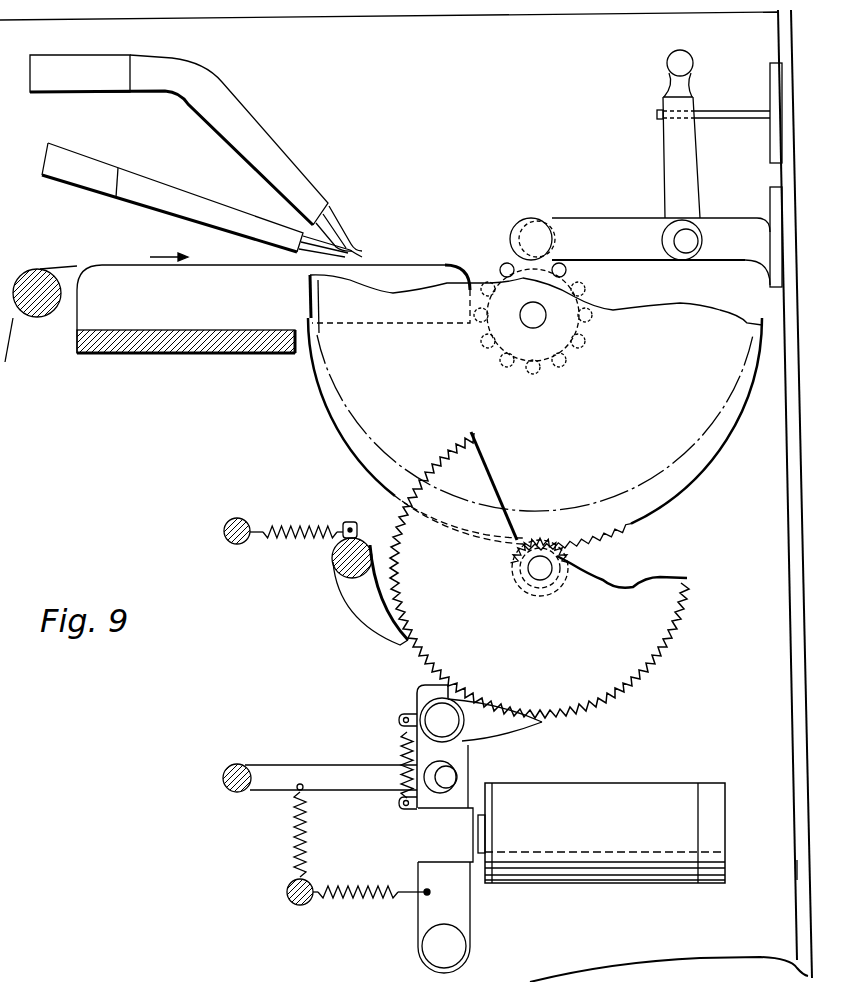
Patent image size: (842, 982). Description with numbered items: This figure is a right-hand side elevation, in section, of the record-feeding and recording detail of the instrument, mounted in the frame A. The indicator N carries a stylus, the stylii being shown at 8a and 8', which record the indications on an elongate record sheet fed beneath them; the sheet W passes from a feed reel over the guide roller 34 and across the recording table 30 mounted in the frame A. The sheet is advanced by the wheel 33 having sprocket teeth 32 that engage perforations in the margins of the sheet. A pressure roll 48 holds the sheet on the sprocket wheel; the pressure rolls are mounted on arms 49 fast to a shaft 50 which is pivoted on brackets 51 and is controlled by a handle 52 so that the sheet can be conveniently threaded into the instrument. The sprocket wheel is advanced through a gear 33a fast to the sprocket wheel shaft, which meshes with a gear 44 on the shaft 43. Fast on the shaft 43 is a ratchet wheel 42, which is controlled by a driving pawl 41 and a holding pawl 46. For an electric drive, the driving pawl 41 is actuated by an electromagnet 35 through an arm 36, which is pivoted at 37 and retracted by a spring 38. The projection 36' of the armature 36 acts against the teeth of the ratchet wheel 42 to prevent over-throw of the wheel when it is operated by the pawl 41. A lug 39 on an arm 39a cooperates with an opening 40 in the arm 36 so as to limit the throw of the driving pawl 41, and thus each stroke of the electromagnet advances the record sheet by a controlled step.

The work piece / upper arm W is at (270, 162).
The indicator N is at (178, 192).
The stylus 8a is at (343, 228).
The stylus 8' is at (298, 248).
The recording table 30 is at (133, 283).
The guide roller 34 is at (40, 318).
The wheel 33 is at (627, 300).
The gear 33a is at (690, 478).
The sprocket teeth 32 is at (588, 294).
The pressure roll 48 is at (522, 228).
The arm 49 is at (596, 225).
The shaft 50 is at (690, 245).
The bracket 51 is at (718, 222).
The handle 52 is at (688, 150).
The shaft 43 is at (545, 578).
The gear 44 is at (562, 560).
The ratchet wheel 42 is at (665, 660).
The holding pawl 46 is at (358, 600).
The arm 36 is at (458, 829).
The projection 36' is at (453, 694).
The driving pawl 41 is at (525, 742).
The opening 40 is at (458, 765).
The lug 39 is at (443, 781).
The arm 39a is at (345, 790).
The spring 38 is at (372, 900).
The pivot 37 is at (458, 947).
The electromagnet 35 is at (583, 880).
The frame A is at (797, 873).